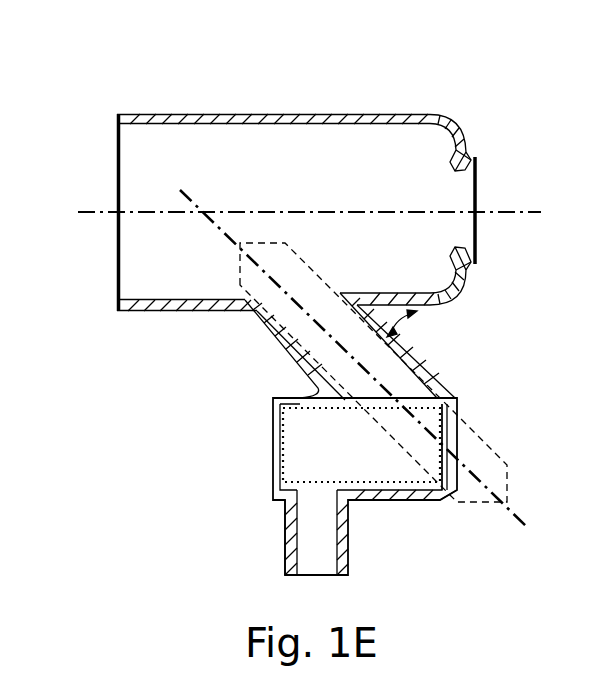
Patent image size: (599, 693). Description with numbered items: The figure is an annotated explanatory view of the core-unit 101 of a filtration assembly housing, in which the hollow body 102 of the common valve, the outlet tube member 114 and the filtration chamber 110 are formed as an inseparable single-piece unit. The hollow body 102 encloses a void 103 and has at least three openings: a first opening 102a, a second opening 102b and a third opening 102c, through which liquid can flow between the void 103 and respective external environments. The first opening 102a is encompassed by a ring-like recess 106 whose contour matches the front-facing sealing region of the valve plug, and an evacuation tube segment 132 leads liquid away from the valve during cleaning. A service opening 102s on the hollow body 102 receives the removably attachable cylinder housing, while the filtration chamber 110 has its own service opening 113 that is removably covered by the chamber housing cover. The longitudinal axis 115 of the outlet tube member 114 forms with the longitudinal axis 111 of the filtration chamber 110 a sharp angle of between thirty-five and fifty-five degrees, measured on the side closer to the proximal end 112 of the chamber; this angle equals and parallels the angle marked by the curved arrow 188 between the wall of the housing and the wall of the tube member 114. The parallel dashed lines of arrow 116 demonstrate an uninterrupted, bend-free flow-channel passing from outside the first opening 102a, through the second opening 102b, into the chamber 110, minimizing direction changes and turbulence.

The core-unit 101 is at (121, 80).
The service opening 113 is at (118, 193).
The filtration chamber 110 is at (318, 192).
The longitudinal axis of the filtration chamber 111 is at (157, 217).
The proximal end 112 is at (477, 192).
The outlet tube member 114 is at (290, 357).
The longitudinal axis of the outlet tube member 115 is at (218, 228).
The arrow 116 is at (327, 297).
The curved arrow 188 is at (407, 328).
The second opening 102b is at (403, 357).
The first opening 102a is at (458, 438).
The void 103 is at (273, 452).
The service opening 102s is at (282, 470).
The third opening 102c is at (283, 508).
The evacuation tube segment 132 is at (285, 567).
The hollow body 102 is at (370, 502).
The ring-like recess 106 is at (445, 492).